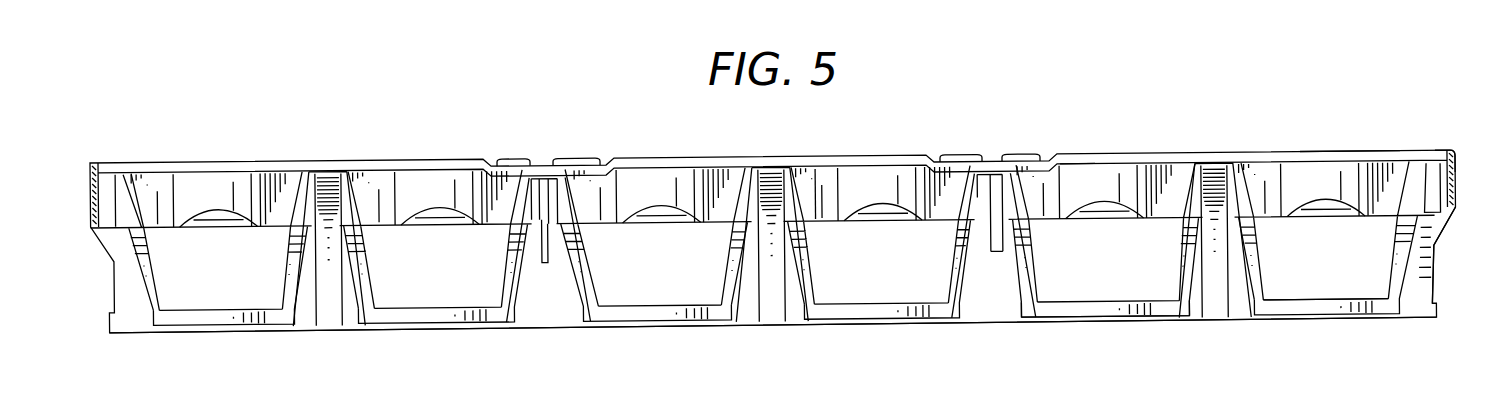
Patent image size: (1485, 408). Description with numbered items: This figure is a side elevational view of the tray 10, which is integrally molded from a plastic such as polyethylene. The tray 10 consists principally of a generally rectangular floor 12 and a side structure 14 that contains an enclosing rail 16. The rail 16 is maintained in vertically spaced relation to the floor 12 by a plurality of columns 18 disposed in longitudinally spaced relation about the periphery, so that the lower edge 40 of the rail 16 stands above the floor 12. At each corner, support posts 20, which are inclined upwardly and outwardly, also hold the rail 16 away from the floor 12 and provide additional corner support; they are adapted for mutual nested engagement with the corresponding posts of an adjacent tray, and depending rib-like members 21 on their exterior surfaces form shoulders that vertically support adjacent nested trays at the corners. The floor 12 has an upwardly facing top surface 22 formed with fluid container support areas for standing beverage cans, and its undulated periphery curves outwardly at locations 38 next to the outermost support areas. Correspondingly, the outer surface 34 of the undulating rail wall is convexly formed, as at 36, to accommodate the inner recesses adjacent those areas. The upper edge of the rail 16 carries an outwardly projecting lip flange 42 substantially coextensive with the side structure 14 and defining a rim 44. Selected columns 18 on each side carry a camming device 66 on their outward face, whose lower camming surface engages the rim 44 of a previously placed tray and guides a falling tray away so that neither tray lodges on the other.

The tray 10 is at (1302, 119).
The floor 12 is at (1403, 318).
The side structure 14 is at (1379, 218).
The rail 16 is at (1176, 198).
The columns 18 is at (803, 289).
The support posts 20 is at (1424, 251).
The rib-like members 21 is at (1443, 206).
The top surface 22 is at (1316, 297).
The outer surface 34 is at (815, 192).
The convex formation 36 is at (1078, 178).
The outwardly curving locations 38 is at (1098, 311).
The lower edge 40 is at (1057, 220).
The lip flange 42 is at (1433, 152).
The rim 44 is at (1343, 156).
The camming device 66 is at (1000, 250).